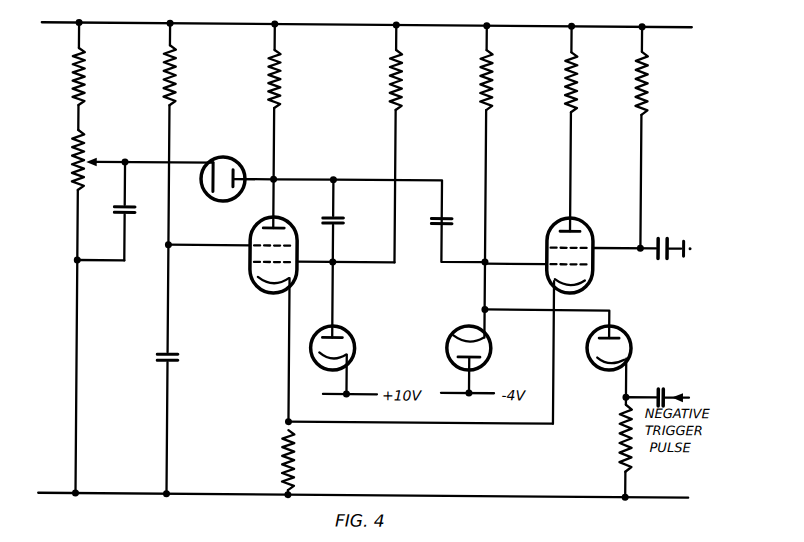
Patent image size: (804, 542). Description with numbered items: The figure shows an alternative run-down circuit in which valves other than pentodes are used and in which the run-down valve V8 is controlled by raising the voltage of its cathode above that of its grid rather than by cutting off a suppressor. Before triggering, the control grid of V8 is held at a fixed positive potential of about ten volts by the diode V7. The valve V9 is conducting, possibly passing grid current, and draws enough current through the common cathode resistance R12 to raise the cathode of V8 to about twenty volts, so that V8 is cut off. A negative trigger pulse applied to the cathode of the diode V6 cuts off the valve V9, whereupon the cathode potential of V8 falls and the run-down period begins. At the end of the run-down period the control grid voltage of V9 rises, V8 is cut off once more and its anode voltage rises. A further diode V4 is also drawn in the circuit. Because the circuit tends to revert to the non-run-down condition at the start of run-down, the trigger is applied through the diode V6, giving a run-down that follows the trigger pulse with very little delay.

The run-down valve V8 is at (261, 319).
The diode V7 is at (346, 357).
The diode tube V4 is at (477, 356).
The valve V9 is at (574, 311).
The diode V6 is at (618, 359).
The resistance R12 is at (305, 462).